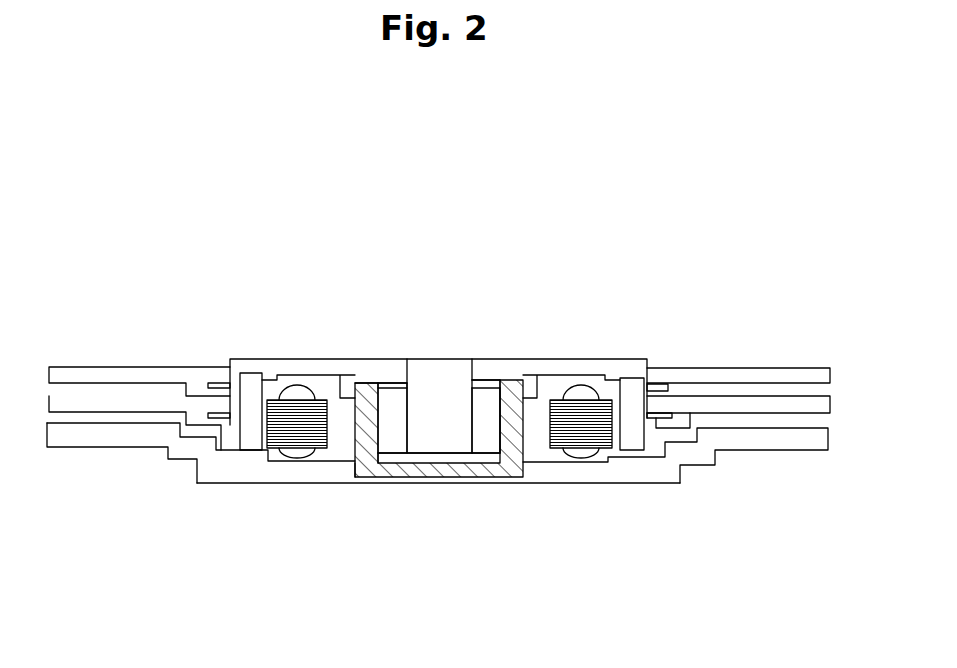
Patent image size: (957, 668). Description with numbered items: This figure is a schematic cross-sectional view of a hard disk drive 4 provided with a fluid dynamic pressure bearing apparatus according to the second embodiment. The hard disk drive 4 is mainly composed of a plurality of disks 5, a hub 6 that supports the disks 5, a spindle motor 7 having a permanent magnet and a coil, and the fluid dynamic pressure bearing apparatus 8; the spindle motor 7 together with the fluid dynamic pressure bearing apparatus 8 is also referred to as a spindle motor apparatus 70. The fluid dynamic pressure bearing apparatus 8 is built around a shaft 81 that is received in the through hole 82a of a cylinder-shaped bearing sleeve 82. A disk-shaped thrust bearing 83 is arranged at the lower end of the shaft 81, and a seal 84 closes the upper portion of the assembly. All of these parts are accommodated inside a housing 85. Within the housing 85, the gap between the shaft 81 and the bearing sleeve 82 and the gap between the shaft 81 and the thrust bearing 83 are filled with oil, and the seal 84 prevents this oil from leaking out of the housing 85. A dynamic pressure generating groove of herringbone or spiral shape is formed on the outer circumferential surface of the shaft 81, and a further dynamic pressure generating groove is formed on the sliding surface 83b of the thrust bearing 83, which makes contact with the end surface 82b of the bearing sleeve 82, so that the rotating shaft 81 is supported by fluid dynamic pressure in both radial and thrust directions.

The hard disk drive 4 is at (587, 222).
The disks 5 is at (713, 377).
The hub 6 is at (638, 367).
The spindle motor 7 is at (602, 473).
The spindle motor apparatus 70 is at (578, 588).
The fluid dynamic pressure bearing apparatus 8 is at (464, 432).
The shaft 81 is at (433, 390).
The bearing sleeve 82 is at (393, 398).
The through hole 82a is at (483, 405).
The end surface 82b is at (387, 432).
The thrust bearing 83 is at (477, 460).
The sliding surface 83b is at (405, 452).
The seal 84 is at (492, 400).
The housing 85 is at (357, 462).